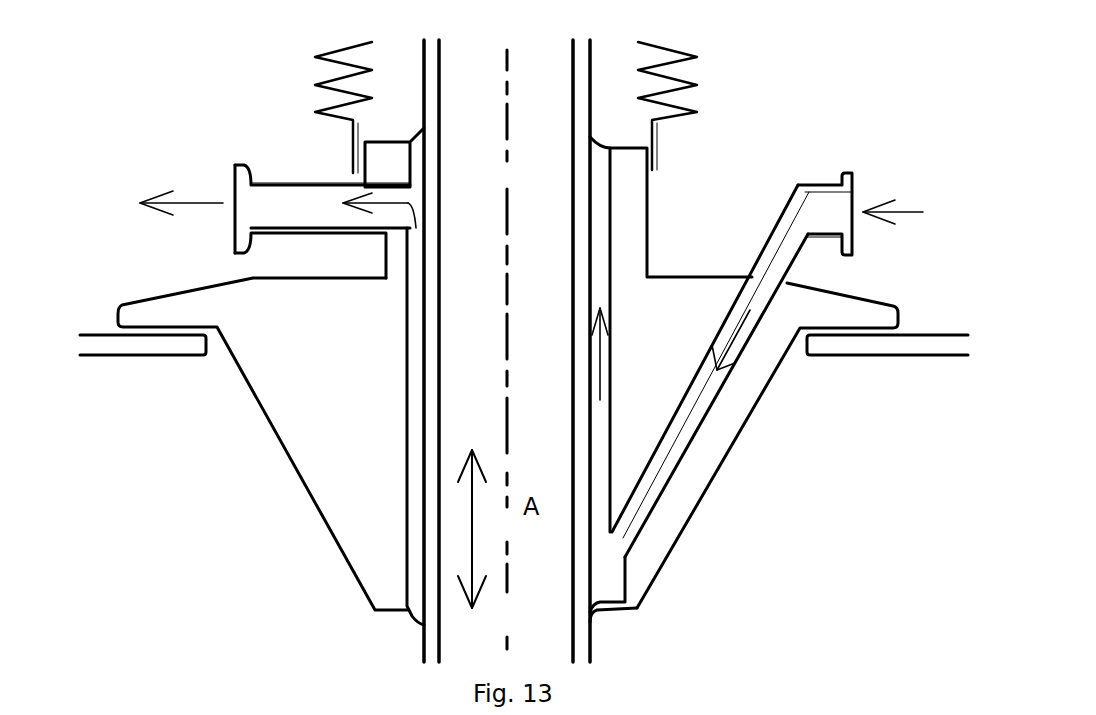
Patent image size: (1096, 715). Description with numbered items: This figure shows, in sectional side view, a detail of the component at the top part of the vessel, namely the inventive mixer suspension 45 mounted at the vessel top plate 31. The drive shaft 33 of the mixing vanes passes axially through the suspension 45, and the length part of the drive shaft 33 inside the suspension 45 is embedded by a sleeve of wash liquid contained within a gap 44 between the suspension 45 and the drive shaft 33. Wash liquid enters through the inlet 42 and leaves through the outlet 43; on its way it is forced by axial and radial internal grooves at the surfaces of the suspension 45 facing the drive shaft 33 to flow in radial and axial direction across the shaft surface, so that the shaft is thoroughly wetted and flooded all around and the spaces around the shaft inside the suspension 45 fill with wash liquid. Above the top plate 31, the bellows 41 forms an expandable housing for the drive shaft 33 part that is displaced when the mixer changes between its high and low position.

The vessel top plate 31 is at (524, 382).
The drive shaft 33 is at (599, 351).
The bellows 41 is at (719, 106).
The inlet 42 is at (271, 202).
The outlet 43 is at (756, 369).
The gap 44 is at (543, 381).
The mixer suspension 45 is at (262, 444).